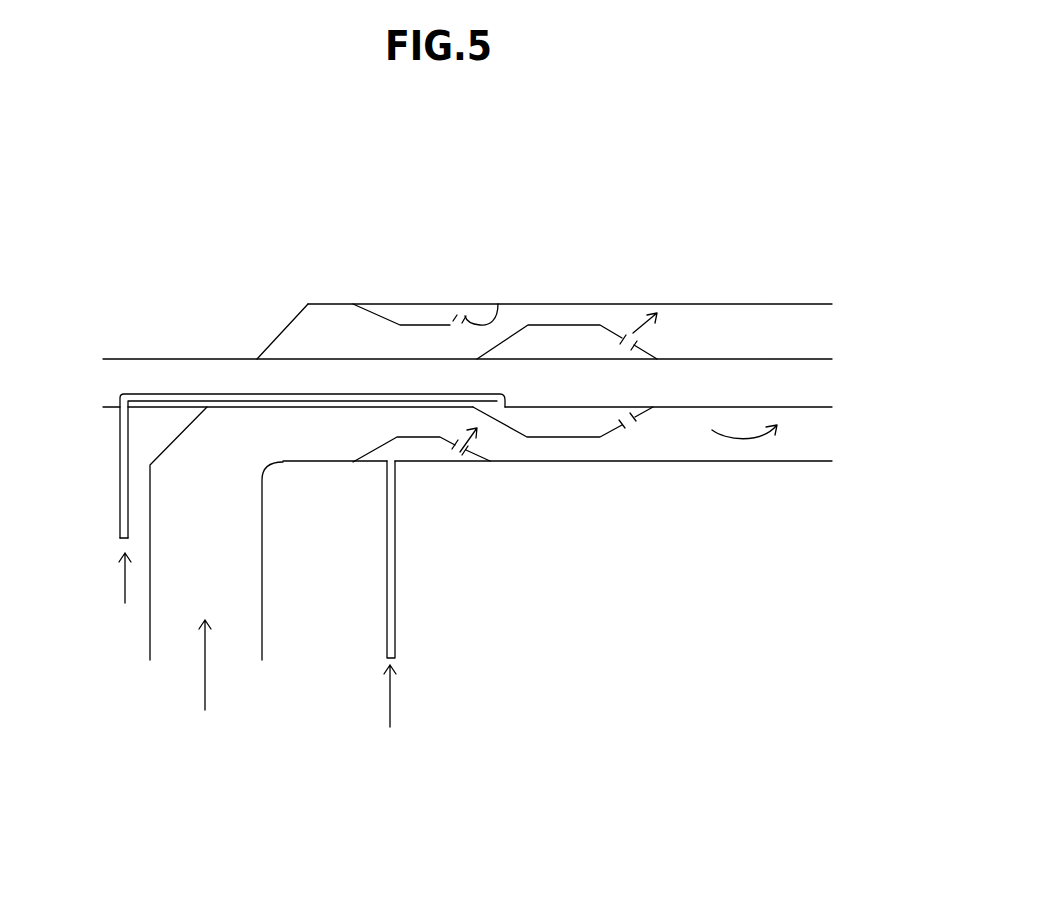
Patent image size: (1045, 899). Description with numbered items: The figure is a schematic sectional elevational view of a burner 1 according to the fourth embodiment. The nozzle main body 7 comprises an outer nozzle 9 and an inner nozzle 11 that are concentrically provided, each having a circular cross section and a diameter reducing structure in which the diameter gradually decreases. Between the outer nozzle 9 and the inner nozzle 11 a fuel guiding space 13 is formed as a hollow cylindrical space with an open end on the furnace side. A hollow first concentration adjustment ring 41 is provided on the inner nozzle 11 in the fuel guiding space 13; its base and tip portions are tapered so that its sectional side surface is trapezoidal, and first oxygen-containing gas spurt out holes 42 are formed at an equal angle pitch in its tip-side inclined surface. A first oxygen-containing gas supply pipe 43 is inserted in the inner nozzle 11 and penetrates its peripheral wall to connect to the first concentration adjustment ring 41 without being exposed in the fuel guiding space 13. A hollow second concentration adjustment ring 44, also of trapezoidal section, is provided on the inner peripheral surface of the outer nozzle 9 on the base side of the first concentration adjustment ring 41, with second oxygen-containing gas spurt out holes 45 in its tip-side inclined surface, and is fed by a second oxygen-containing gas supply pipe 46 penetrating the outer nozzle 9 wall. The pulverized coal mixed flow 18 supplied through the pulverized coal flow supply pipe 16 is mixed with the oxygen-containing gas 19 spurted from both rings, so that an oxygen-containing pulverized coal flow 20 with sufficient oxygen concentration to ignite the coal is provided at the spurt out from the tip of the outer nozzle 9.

The burner 1 is at (186, 175).
The nozzle main body 7 is at (430, 267).
The fuel guiding space 13 is at (332, 307).
The second oxygen-containing gas spurt out holes 45 is at (498, 304).
The outer nozzle 9 is at (610, 304).
The inner nozzle 11 is at (727, 357).
The first oxygen-containing gas supply pipe 43 is at (120, 490).
The oxygen-containing gas 19 is at (125, 592).
The pulverized coal flow supply pipe 16 is at (150, 640).
The pulverized coal mixed flow 18 is at (205, 693).
The second concentration adjustment ring 44 is at (372, 461).
The second oxygen-containing gas supply pipe 46 is at (395, 632).
The first concentration adjustment ring 41 is at (552, 438).
The first oxygen-containing gas spurt out holes 42 is at (633, 425).
The oxygen-containing pulverized coal flow 20 is at (747, 440).